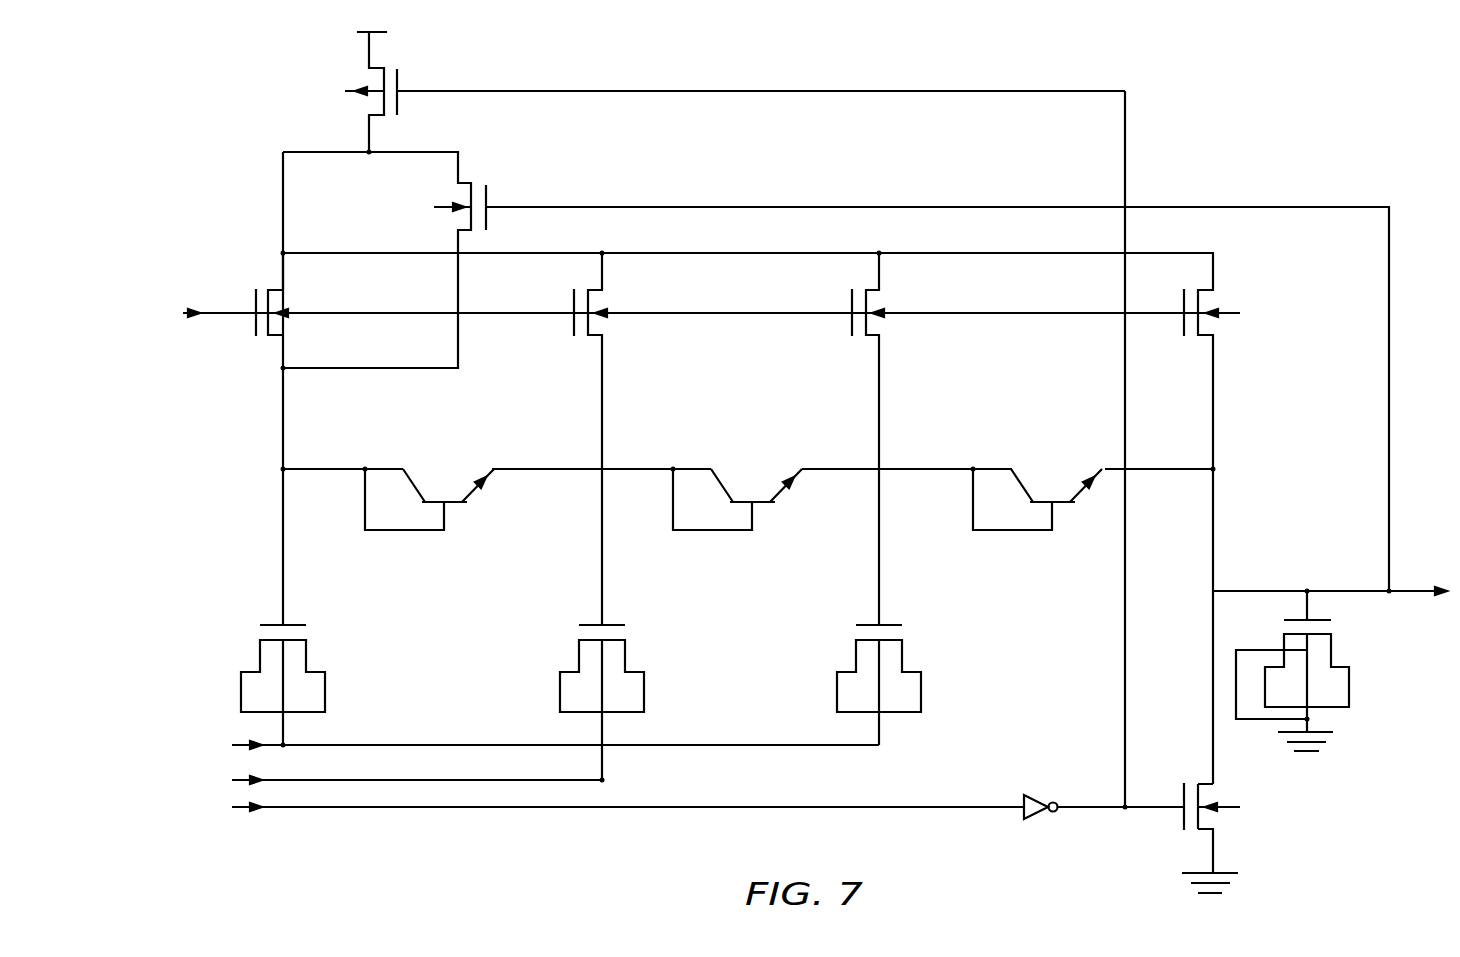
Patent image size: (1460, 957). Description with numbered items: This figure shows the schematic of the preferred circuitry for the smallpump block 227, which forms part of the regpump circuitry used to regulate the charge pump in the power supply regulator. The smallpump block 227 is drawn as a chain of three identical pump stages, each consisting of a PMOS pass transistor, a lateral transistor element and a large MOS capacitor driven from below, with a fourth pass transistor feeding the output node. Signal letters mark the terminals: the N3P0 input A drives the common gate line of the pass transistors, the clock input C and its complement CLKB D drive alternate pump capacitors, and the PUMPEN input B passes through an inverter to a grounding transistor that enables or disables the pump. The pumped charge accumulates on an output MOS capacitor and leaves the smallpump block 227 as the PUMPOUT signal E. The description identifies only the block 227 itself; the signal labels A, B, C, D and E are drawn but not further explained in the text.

The smallpump block 227 is at (1242, 90).
The N3P0 input signal A is at (204, 326).
The PUMPEN enable input signal B is at (579, 808).
The CLK clock input signal C is at (523, 746).
The CLKB complementary clock input signal D is at (379, 780).
The PUMPOUT output signal E is at (1331, 605).